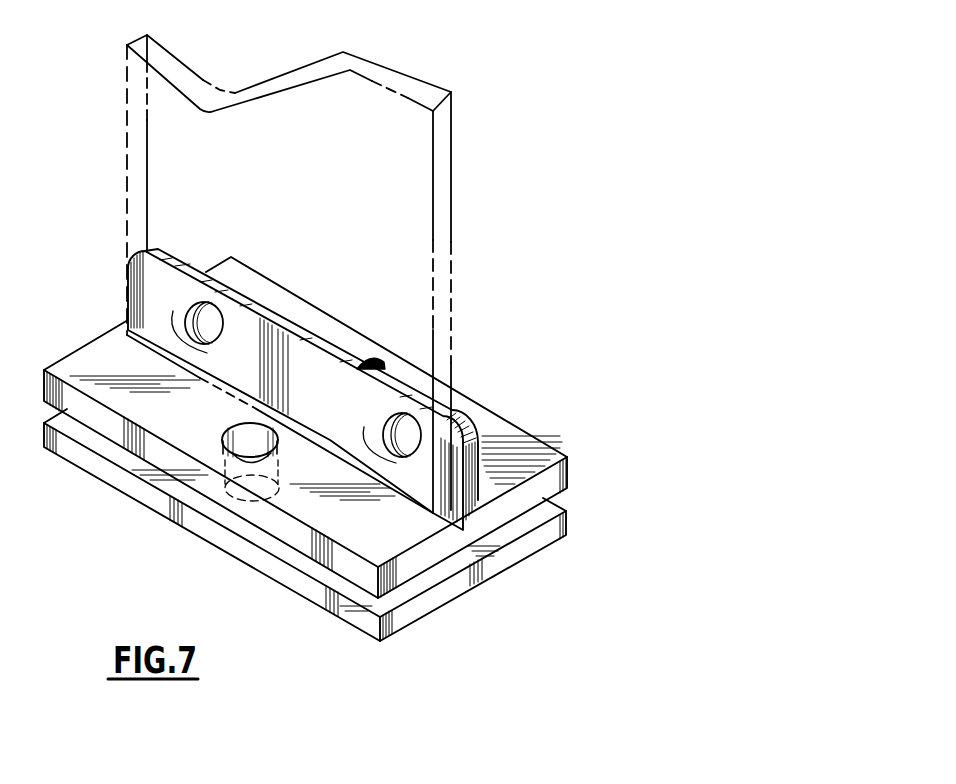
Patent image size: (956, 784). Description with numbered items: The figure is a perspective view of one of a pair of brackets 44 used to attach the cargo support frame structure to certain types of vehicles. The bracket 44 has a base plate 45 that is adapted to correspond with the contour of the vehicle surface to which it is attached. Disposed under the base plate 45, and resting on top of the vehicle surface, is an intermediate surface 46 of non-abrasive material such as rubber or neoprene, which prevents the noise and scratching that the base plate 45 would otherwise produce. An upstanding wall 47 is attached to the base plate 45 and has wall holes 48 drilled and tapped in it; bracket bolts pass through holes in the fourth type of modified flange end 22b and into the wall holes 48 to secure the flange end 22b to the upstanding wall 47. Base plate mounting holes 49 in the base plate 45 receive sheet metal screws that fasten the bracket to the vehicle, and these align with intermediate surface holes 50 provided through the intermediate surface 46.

The fourth type of modified flange end 22b is at (453, 208).
The bracket 44 is at (604, 419).
The base plate 45 is at (567, 474).
The intermediate surface 46 is at (323, 525).
The upstanding wall 47 is at (473, 430).
The wall holes 48 is at (184, 312).
The base plate mounting holes 49 is at (226, 433).
The intermediate surface holes 50 is at (257, 514).